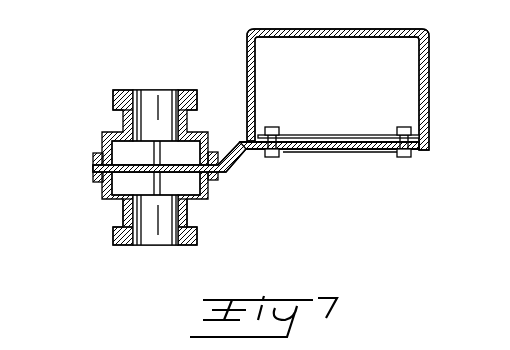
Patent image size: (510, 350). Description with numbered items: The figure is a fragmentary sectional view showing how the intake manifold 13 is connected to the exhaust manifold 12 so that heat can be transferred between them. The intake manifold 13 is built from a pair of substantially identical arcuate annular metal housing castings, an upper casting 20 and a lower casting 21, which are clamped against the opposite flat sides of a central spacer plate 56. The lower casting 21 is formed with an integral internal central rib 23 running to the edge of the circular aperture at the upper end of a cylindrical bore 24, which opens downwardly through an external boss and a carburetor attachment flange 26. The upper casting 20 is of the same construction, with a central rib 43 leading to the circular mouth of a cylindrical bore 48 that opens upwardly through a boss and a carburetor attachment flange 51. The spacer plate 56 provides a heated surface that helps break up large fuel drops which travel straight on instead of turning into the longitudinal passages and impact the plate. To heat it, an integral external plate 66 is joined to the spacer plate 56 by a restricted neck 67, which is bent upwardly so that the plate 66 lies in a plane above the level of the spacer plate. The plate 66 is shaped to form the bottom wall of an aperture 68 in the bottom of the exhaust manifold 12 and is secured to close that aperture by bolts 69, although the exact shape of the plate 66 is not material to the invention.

The exhaust manifold 12 is at (435, 54).
The intake manifold 13 is at (133, 167).
The upper casting 20 is at (204, 131).
The lower casting 21 is at (205, 198).
The central rib 23 is at (161, 188).
The cylindrical bore 24 is at (168, 243).
The carburetor attachment flange 26 is at (197, 241).
The central rib 43 is at (161, 156).
The cylindrical bore 48 is at (175, 89).
The carburetor attachment flange 51 is at (180, 92).
The spacer plate 56 is at (96, 170).
The external plate 66 is at (334, 150).
The restricted neck 67 is at (233, 152).
The aperture 68 is at (296, 137).
The bolts 69 is at (273, 157).